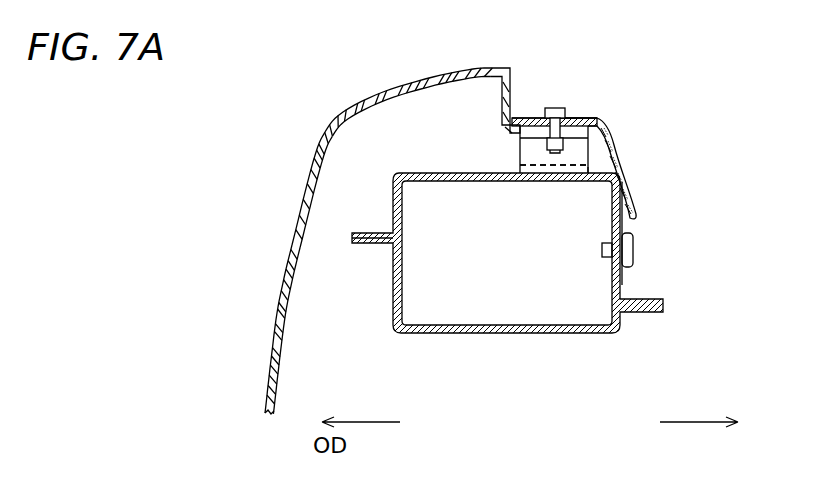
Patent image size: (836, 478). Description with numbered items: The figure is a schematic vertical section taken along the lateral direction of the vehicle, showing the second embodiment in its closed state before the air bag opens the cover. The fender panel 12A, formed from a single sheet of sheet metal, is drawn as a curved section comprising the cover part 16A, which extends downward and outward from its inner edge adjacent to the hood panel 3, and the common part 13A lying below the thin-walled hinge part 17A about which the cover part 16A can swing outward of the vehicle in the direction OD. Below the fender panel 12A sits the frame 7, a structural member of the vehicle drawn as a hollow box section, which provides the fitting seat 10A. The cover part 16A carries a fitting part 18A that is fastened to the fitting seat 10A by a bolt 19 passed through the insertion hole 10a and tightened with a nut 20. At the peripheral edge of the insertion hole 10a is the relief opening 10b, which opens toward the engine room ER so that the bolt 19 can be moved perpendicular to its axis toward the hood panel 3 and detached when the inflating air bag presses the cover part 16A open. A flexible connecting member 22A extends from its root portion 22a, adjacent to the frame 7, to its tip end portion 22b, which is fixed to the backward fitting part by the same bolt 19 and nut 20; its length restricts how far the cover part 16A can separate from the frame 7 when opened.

The hood panel 3 is at (713, 437).
The frame 7 is at (550, 355).
The fitting seat 10A is at (521, 134).
The insertion hole 10a is at (555, 152).
The relief opening 10b is at (617, 148).
The fender panel 12A is at (168, 90).
The common part 13A is at (293, 223).
The cover part 16A is at (343, 112).
The hinge part 17A is at (296, 142).
The fitting part 18A is at (590, 120).
The bolt 19 is at (557, 115).
The nut 20 is at (548, 140).
The connecting member 22A is at (652, 197).
The root portion 22a is at (630, 270).
The tip end portion 22b is at (578, 118).